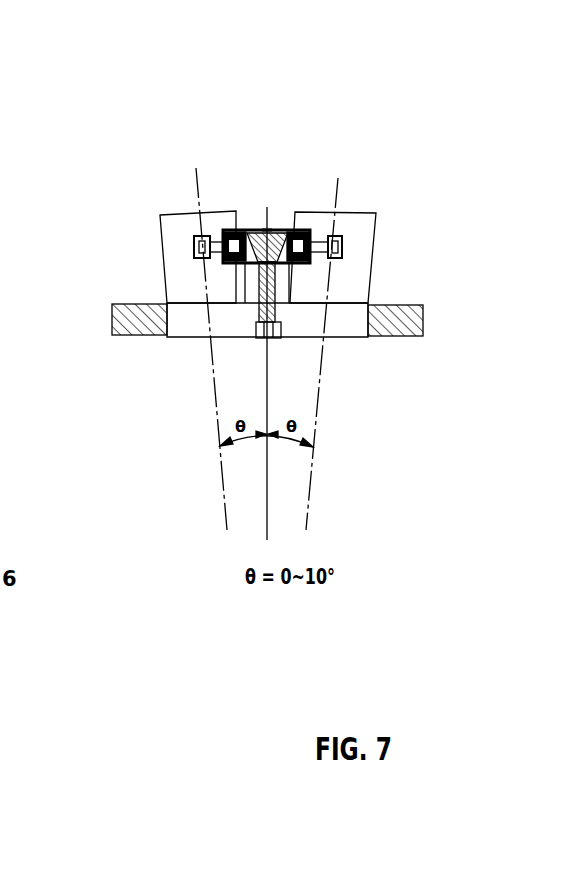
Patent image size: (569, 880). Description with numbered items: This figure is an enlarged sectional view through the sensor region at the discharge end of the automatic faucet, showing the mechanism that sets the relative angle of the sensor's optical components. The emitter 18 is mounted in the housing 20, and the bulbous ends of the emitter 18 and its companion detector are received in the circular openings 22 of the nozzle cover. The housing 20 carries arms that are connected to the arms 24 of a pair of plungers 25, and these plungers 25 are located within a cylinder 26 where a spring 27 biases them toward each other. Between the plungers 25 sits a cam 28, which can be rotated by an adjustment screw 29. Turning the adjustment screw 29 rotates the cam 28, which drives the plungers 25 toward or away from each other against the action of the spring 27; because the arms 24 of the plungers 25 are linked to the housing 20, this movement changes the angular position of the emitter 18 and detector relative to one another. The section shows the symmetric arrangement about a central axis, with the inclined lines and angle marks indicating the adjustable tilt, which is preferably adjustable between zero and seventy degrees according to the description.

The emitter 18 is at (173, 237).
The housing 20 is at (165, 277).
The circular openings 22 is at (165, 337).
The arms of plungers 24 is at (213, 238).
The plungers 25 is at (257, 238).
The cylinder 26 is at (280, 258).
The spring 27 is at (237, 228).
The cam 28 is at (266, 232).
The adjustment screw 29 is at (296, 296).